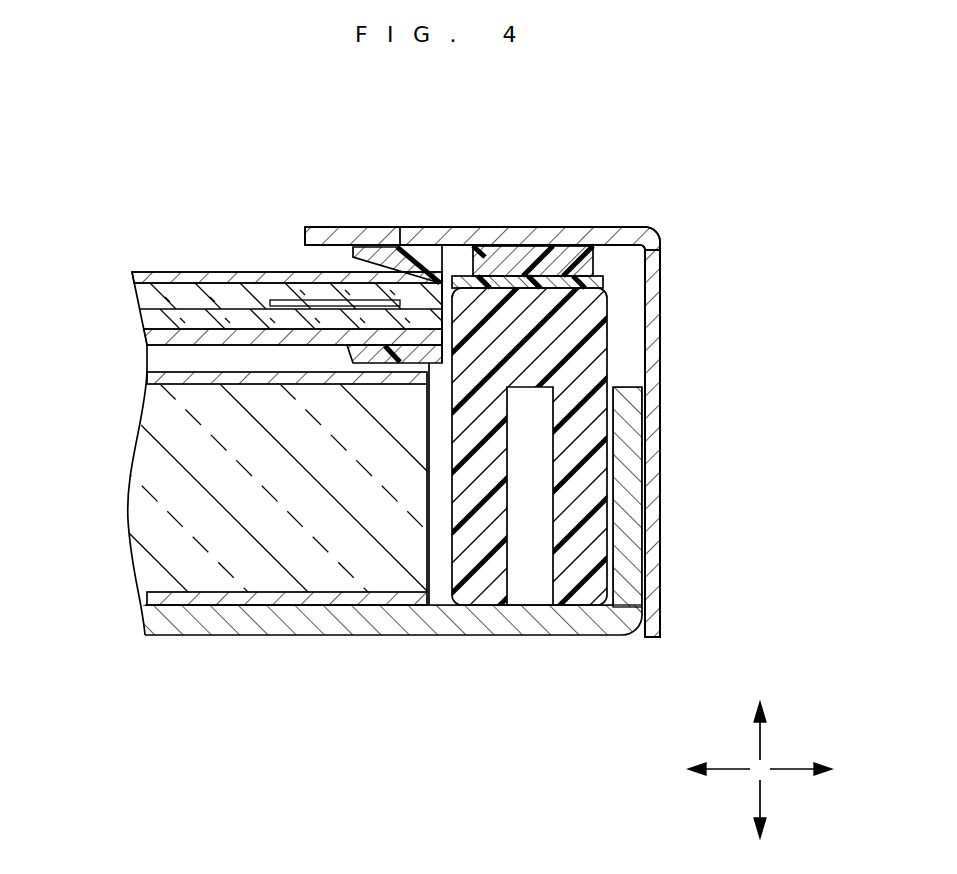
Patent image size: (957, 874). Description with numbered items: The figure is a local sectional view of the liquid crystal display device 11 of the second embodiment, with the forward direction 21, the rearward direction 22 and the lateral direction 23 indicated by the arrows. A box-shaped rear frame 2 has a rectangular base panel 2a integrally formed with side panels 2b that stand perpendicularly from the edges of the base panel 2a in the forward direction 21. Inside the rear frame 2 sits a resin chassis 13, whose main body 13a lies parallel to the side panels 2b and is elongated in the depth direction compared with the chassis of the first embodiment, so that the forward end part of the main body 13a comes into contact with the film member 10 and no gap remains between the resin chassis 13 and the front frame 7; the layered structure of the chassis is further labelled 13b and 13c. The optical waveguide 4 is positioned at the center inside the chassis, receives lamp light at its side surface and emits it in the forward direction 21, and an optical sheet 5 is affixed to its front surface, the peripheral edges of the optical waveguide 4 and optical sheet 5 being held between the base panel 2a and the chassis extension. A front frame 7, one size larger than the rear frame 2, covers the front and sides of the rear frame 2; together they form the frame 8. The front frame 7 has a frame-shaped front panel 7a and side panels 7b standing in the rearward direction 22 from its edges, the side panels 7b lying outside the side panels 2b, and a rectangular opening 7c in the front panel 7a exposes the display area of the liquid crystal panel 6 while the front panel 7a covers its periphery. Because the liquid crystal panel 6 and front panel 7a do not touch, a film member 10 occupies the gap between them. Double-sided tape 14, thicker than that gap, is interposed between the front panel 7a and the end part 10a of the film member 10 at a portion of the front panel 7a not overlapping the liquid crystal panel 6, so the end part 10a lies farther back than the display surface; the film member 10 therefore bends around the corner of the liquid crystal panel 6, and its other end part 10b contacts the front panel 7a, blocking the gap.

The rear frame 2 is at (648, 702).
The base panel 2a is at (457, 617).
The side panels 2b is at (630, 522).
The optical waveguide 4 is at (163, 470).
The optical sheet 5 is at (147, 373).
The liquid crystal panel 6 is at (179, 252).
The front frame 7 is at (678, 160).
The front panel 7a is at (602, 247).
The side panels 7b is at (661, 306).
The opening 7c is at (304, 232).
The frame 8 is at (697, 400).
The film member 10 is at (448, 246).
The end part of film member 10a is at (510, 246).
The end part of film member 10b is at (370, 247).
The liquid crystal display device 11 is at (716, 212).
The resin chassis 13 is at (790, 328).
The main body 13a is at (580, 450).
The second layer 13b is at (548, 437).
The third layer 13c is at (447, 330).
The double-sided tape 14 is at (552, 246).
The forward direction 21 is at (762, 740).
The rearward direction 22 is at (760, 804).
The lateral direction 23 is at (728, 768).